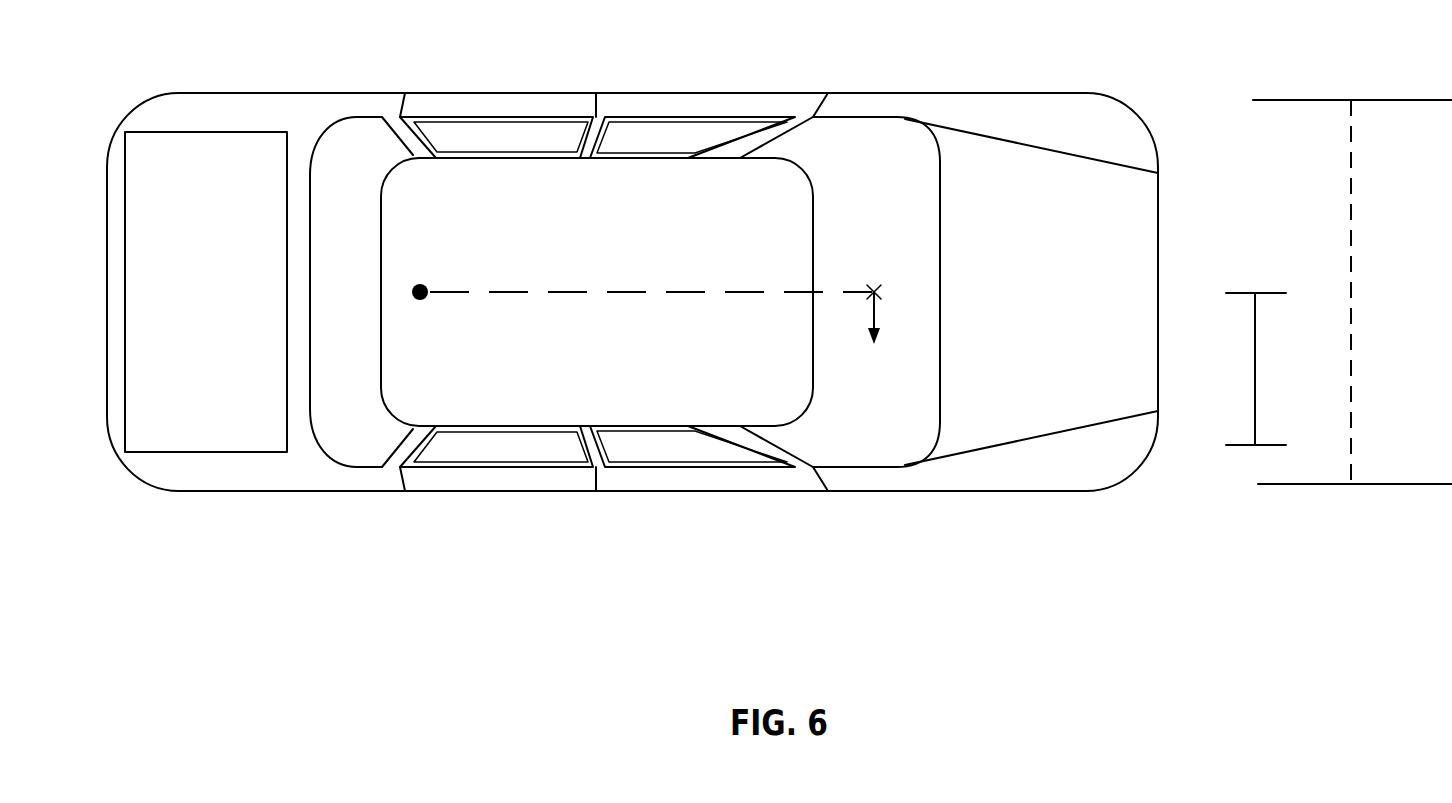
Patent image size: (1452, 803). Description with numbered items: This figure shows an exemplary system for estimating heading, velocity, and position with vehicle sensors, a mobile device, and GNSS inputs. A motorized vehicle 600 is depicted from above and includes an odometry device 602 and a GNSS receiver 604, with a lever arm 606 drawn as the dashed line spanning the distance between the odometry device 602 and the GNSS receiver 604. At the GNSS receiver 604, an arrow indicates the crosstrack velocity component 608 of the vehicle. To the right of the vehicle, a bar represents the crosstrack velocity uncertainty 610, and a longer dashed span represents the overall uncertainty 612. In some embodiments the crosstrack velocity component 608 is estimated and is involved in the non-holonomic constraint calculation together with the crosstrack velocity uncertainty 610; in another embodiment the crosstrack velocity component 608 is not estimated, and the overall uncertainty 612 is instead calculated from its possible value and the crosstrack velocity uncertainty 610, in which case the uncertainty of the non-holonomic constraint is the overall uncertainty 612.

The motorized vehicle 600 is at (1033, 93).
The odometry device 602 is at (428, 284).
The GNSS receiver 604 is at (884, 272).
The lever arm 606 is at (645, 290).
The crosstrack velocity component (Vct) 608 is at (885, 323).
The Vct uncertainty 610 is at (1241, 292).
The overall uncertainty 612 is at (1362, 99).